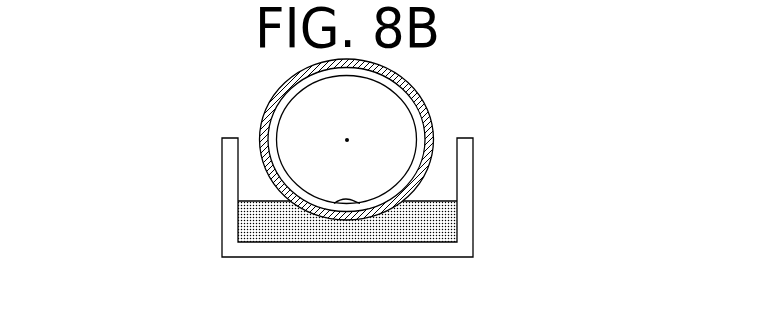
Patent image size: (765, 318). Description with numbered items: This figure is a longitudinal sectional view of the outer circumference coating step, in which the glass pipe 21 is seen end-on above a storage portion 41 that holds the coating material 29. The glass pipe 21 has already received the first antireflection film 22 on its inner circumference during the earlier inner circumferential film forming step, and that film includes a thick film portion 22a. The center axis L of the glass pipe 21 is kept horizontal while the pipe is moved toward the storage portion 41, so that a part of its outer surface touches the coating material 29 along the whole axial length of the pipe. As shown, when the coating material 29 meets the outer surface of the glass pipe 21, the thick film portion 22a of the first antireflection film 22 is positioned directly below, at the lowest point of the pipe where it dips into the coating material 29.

The glass pipe 21 is at (393, 67).
The first antireflection film 22 is at (419, 99).
The thick film portion 22a is at (353, 201).
The storage portion 41 is at (232, 137).
The coating material 29 is at (437, 222).
The center axis L is at (345, 140).